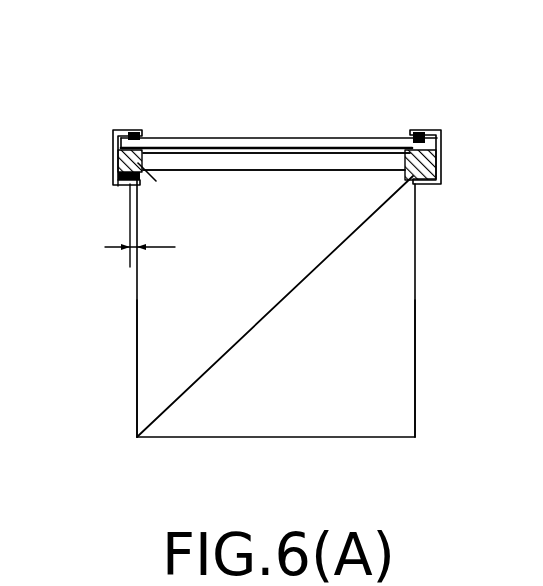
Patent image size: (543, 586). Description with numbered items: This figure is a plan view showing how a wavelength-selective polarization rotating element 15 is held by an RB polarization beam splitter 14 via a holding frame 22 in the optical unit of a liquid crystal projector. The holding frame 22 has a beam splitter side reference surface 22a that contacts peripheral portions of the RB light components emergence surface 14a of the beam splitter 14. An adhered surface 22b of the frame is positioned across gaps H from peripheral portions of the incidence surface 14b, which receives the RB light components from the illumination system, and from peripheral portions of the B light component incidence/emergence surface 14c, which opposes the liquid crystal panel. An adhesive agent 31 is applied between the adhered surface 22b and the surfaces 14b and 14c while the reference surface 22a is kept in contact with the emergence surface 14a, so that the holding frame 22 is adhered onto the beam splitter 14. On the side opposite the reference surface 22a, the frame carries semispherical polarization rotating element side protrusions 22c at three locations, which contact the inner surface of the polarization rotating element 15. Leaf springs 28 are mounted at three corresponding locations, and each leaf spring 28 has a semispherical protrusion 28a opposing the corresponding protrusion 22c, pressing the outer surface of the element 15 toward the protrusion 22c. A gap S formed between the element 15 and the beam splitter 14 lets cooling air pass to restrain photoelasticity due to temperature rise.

The RB polarization beam splitter 14 is at (398, 313).
The RB light components emergence surface 14a is at (238, 157).
The incidence surface 14b is at (415, 372).
The B light component incidence/emergence surface 14c is at (137, 383).
The wavelength-selective polarization rotating element 15 is at (350, 138).
The holding frame 22 is at (166, 148).
The beam splitter side reference surface 22a is at (142, 172).
The adhered surface 22b is at (418, 183).
The polarization rotating element side protrusions 22c is at (397, 136).
The leaf springs 28 is at (114, 138).
The semispherical protrusion 28a is at (130, 132).
The adhesive agent 31 is at (117, 184).
The gaps H is at (130, 263).
The gap S is at (293, 148).